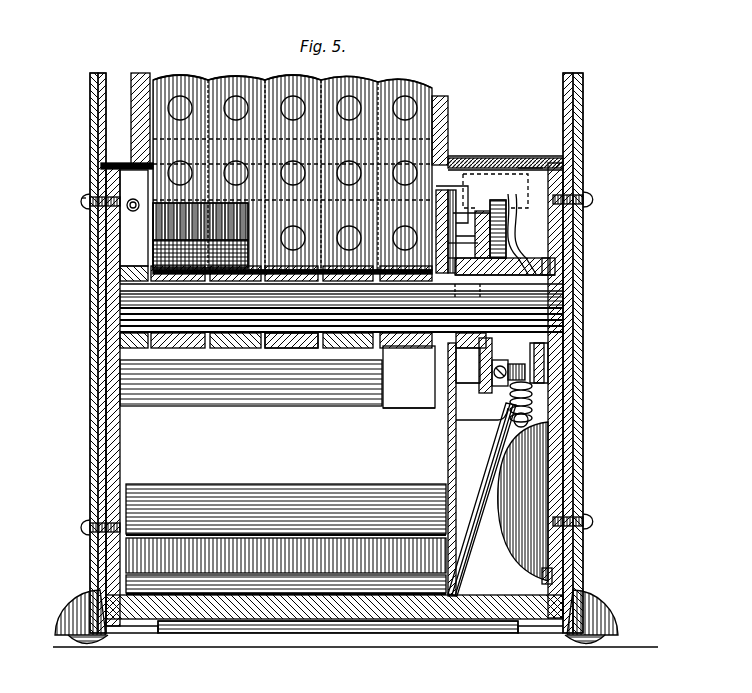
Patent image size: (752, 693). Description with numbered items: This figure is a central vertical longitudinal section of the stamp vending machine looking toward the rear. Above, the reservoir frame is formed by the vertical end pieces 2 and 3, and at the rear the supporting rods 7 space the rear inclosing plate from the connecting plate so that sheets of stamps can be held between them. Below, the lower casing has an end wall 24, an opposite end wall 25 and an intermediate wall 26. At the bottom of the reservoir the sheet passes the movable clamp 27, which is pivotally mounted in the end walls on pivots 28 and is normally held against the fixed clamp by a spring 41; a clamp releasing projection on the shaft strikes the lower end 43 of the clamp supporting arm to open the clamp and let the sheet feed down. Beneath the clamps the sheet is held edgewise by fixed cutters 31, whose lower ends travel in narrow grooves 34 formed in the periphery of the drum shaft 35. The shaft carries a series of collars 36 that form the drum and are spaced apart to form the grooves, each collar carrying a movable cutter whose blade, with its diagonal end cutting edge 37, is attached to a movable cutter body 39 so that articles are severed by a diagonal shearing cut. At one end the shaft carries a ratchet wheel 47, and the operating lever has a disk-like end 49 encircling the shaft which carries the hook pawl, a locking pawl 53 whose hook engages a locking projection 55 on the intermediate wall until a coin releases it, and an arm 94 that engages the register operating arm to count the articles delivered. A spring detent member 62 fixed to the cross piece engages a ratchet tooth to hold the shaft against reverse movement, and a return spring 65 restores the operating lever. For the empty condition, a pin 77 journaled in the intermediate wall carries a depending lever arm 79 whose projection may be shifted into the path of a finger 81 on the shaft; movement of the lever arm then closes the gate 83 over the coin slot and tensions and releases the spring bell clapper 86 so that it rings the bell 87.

The vertical end piece 2 is at (84, 138).
The vertical end piece 3 is at (576, 130).
The supporting rod 7 is at (127, 82).
The end wall 24 is at (96, 393).
The end wall 25 is at (556, 407).
The intermediate wall 26 is at (440, 430).
The movable clamp 27 is at (125, 156).
The pivot 28 is at (86, 228).
The fixed cutter 31 is at (202, 252).
The groove 34 is at (256, 341).
The drum shaft 35 is at (341, 308).
The collar 36 is at (213, 341).
The end cutting edge 37 is at (390, 400).
The movable cutter body 39 is at (379, 380).
The spring 41 is at (128, 188).
The lower end of the clamp supporting arm 43 is at (96, 262).
The ratchet wheel 47 is at (471, 366).
The disk-like end of the operating lever 49 is at (484, 386).
The locking pawl 53 is at (440, 251).
The locking projection 55 is at (440, 237).
The spring detent member 62 is at (488, 192).
The return spring 65 is at (500, 414).
The pin 77 is at (448, 198).
The lever arm 79 is at (524, 230).
The finger 81 is at (548, 258).
The gate 83 is at (522, 158).
The spring bell clapper 86 is at (546, 478).
The bell 87 is at (526, 462).
The arm 94 is at (493, 380).